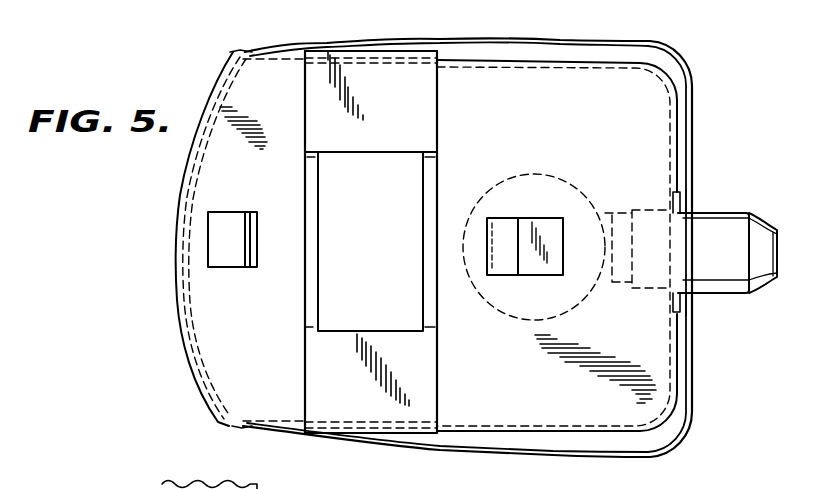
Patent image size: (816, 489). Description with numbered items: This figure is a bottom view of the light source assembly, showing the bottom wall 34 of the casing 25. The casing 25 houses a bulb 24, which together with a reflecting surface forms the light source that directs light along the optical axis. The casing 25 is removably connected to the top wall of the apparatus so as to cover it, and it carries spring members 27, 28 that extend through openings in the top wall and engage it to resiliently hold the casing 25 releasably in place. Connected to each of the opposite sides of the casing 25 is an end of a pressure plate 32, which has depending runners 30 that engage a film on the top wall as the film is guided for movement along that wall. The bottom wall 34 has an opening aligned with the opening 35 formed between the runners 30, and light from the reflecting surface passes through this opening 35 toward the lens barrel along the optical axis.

The bulb 24 is at (531, 173).
The casing 25 is at (605, 42).
The spring member 27 is at (218, 228).
The spring member 28 is at (553, 225).
The runner 30 is at (430, 202).
The pressure plate 32 is at (402, 92).
The bottom wall 34 is at (653, 117).
The opening 35 is at (399, 297).